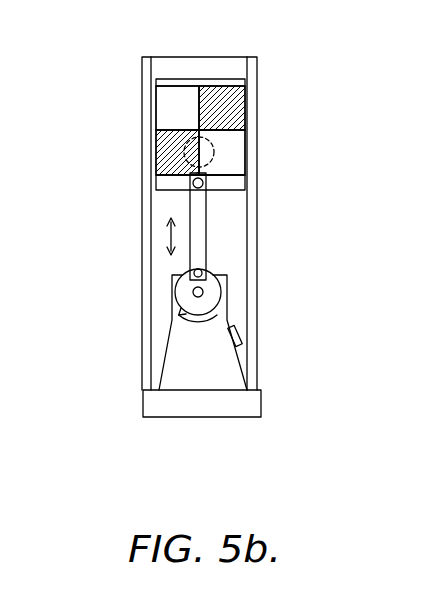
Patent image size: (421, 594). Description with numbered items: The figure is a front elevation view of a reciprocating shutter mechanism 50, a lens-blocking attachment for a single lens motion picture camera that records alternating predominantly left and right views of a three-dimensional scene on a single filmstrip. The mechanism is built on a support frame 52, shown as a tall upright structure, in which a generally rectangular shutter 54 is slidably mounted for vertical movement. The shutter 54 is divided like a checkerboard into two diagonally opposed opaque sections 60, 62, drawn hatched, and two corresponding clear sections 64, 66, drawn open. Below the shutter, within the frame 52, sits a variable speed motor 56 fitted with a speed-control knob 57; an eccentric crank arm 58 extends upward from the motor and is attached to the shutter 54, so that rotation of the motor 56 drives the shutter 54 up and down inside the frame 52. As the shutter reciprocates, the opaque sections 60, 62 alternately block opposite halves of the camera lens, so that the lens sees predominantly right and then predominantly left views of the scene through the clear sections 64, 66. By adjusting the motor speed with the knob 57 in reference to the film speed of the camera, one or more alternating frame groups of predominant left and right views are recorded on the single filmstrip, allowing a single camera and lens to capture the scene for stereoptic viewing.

The reciprocating shutter mechanism 50 is at (252, 42).
The support frame 52 is at (258, 308).
The shutter 54 is at (243, 158).
The variable speed motor 56 is at (212, 373).
The speed-control knob 57 is at (240, 338).
The eccentric crank arm 58 is at (200, 234).
The opaque section 60 is at (243, 98).
The opaque section 62 is at (170, 157).
The clear section 64 is at (167, 108).
The clear section 66 is at (228, 165).